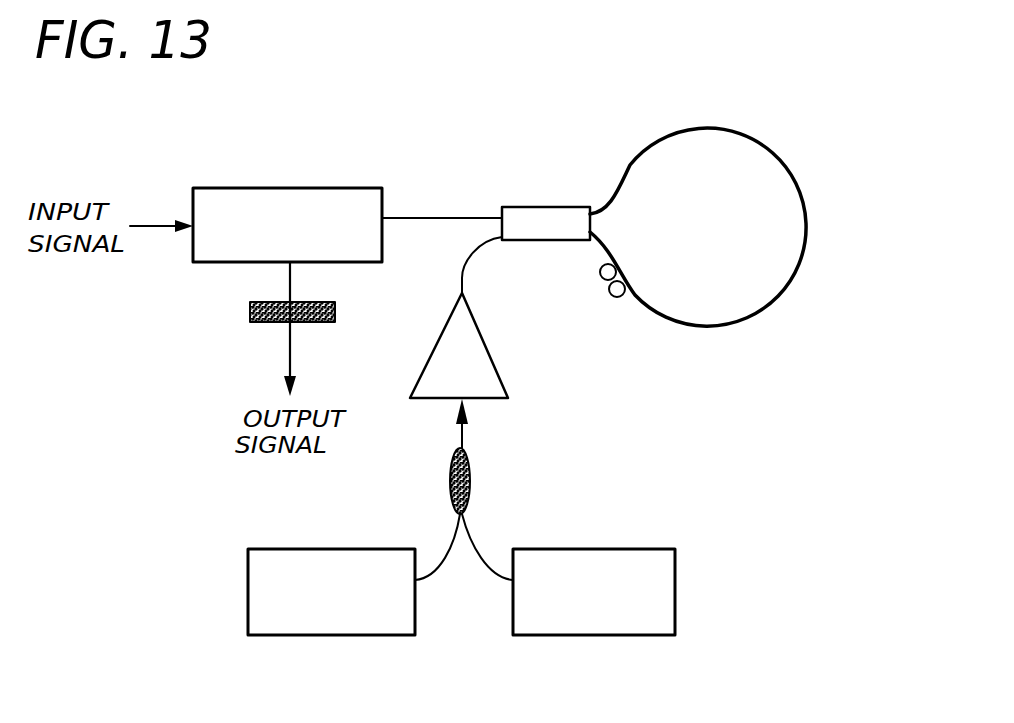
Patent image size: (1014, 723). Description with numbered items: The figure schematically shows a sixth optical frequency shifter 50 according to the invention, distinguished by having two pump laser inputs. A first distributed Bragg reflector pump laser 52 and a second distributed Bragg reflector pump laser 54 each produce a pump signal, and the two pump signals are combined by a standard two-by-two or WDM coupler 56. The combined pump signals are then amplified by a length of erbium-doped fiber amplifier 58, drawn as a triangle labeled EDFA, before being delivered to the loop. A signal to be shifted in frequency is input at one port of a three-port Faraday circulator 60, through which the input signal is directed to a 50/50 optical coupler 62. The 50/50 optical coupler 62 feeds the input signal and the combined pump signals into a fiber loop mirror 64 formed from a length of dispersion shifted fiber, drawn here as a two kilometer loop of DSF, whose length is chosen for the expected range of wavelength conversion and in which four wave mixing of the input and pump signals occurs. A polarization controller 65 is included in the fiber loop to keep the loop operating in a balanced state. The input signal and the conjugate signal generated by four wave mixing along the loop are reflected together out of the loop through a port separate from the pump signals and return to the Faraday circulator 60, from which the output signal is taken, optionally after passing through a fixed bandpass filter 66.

The frequency shifter 50 is at (805, 356).
The first distributed Bragg reflector pump laser 52 is at (345, 625).
The second distributed Bragg reflector pump laser 54 is at (610, 625).
The coupler 56 is at (471, 487).
The erbium-doped fiber amplifier 58 is at (500, 391).
The Faraday circulator 60 is at (362, 208).
The 50/50 optical coupler 62 is at (545, 208).
The 2 km dispersion-shifted fiber loop 64 is at (812, 188).
The polarization controller 65 is at (605, 282).
The fixed bandpass filter 66 is at (322, 322).